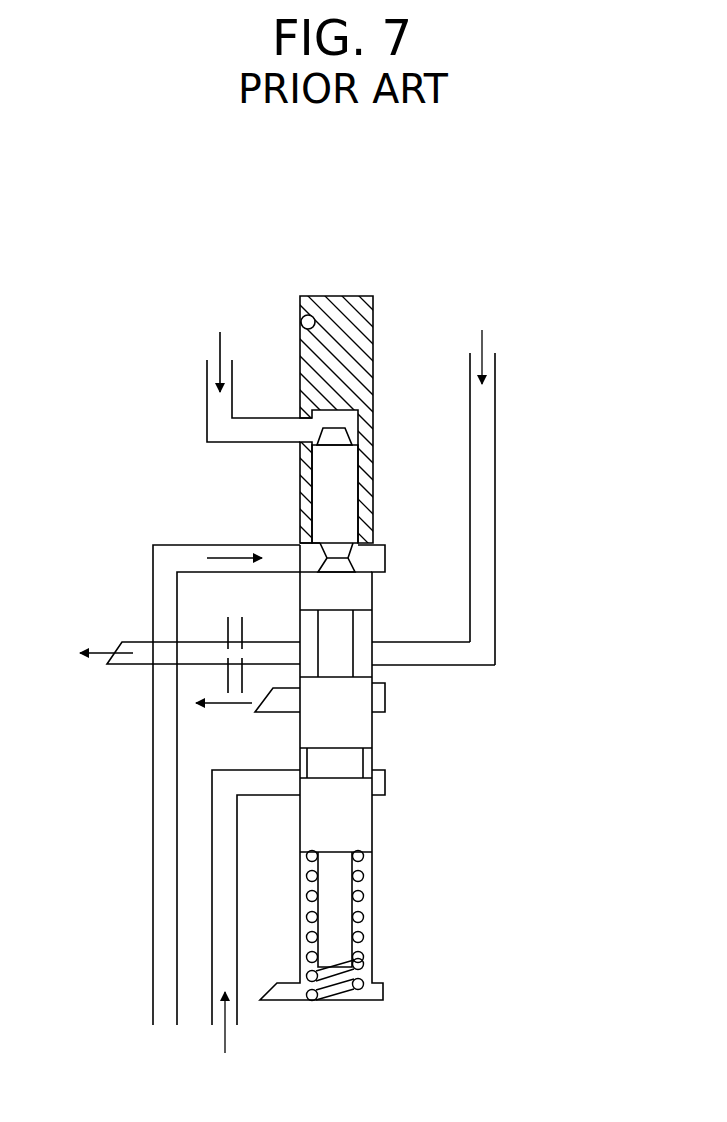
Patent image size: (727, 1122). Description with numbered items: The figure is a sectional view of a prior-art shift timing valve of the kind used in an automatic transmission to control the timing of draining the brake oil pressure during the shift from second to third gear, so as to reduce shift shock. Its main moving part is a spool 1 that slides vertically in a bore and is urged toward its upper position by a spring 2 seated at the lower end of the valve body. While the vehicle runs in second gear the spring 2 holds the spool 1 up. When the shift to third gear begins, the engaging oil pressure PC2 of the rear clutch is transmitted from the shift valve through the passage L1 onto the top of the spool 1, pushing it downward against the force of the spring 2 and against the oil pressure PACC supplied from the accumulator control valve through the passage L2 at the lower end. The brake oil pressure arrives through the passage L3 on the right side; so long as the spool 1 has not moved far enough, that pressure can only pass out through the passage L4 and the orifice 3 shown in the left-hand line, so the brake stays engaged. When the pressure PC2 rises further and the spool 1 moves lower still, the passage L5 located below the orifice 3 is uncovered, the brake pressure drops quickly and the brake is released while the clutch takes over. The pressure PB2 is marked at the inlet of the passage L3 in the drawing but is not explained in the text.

The spool 1 is at (362, 630).
The spring 2 is at (360, 905).
The orifice 3 is at (226, 652).
The passage L1 is at (183, 544).
The passage L2 is at (238, 892).
The passage L3 is at (497, 445).
The passage L4 is at (118, 667).
The passage L5 is at (275, 716).
The pressure PB2 is at (483, 345).
The engaging oil pressure of the rear clutch C2 PC2 is at (237, 495).
The oil pressure from the accumulator control valve PACC is at (225, 1032).